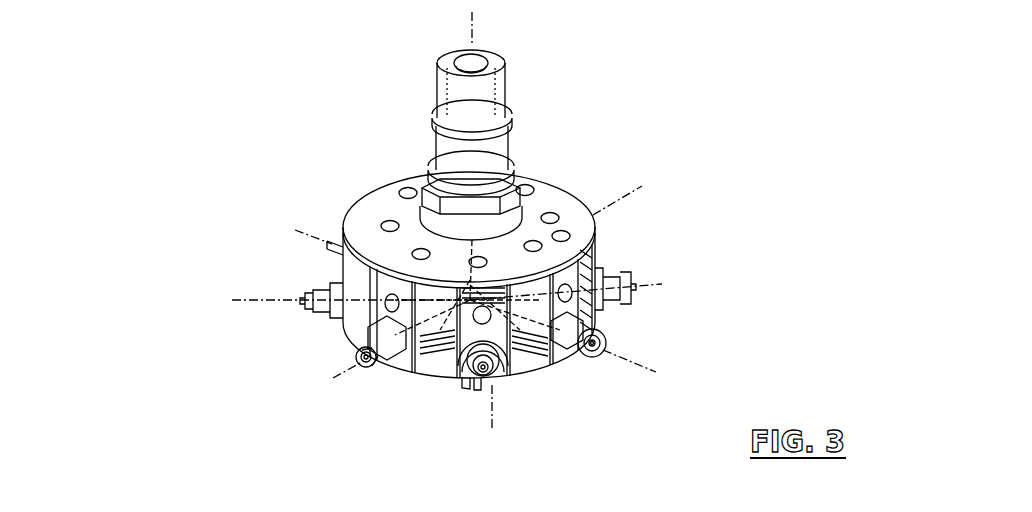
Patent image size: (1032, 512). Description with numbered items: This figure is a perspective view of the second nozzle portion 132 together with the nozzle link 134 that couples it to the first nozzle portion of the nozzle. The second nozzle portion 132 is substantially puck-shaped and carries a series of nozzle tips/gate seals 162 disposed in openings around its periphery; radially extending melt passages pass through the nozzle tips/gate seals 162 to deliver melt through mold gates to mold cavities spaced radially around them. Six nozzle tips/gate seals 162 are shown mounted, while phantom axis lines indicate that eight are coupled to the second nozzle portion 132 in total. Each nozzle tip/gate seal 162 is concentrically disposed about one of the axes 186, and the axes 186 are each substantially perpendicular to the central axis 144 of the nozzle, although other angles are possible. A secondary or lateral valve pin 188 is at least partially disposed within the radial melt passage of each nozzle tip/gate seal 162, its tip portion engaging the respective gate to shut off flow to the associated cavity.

The second nozzle portion 132 is at (550, 190).
The nozzle link 134 is at (500, 90).
The central axis 144 is at (470, 28).
The nozzle tips/gate seals 162 is at (343, 262).
The axes 186 is at (300, 232).
The lateral valve pins 188 is at (682, 330).